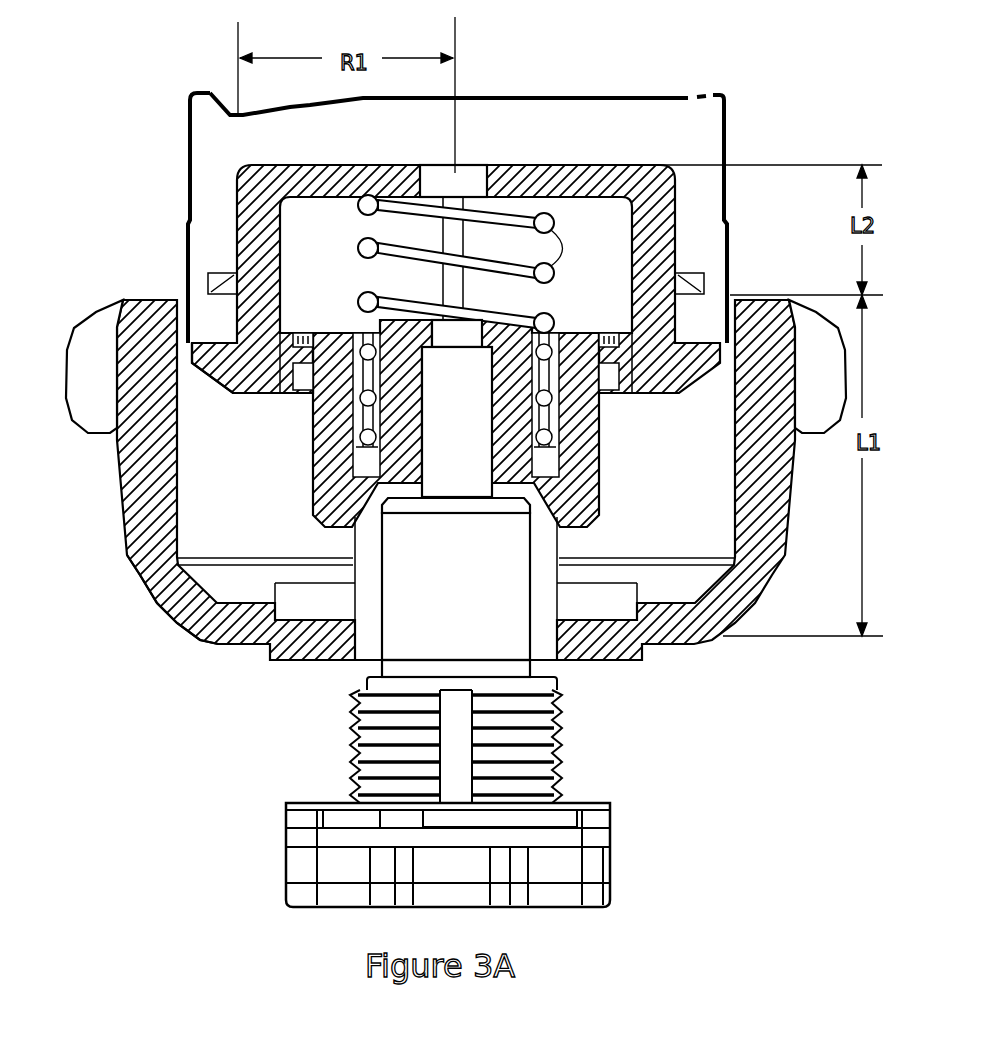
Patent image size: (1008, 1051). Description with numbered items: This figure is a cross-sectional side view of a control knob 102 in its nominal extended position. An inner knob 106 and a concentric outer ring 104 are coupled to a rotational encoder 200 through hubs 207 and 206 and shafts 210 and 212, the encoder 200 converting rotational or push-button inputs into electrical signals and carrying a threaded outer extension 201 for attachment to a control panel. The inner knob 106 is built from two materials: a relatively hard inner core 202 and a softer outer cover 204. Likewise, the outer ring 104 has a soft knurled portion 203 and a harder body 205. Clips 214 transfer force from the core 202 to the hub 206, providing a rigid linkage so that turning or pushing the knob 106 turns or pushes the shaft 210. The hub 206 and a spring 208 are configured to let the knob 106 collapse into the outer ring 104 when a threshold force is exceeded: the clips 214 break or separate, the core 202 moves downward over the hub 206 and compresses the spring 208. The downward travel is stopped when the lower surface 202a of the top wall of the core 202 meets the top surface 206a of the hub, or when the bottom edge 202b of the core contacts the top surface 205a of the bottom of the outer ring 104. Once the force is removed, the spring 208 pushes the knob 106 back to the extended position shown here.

The knob 102 is at (521, 184).
The outer ring 104 is at (741, 602).
The inner knob 106 is at (633, 104).
The rotational encoder 200 is at (612, 856).
The threaded outer extension 201 is at (575, 742).
The inner core 202 is at (380, 165).
The lower surface of the top wall of the core 202a is at (328, 196).
The bottom edge of the core 202b is at (256, 393).
The knurled portion 203 is at (85, 352).
The outer cover 204 is at (523, 124).
The body 205 is at (157, 598).
The top surface of the bottom of the outer ring 205a is at (233, 607).
The hub 206 is at (600, 458).
The top surface of the hub 206a is at (322, 330).
The hub 207 is at (548, 652).
The spring 208 is at (536, 314).
The shaft 210 is at (477, 457).
The shaft 212 is at (481, 594).
The clips 214 is at (300, 380).